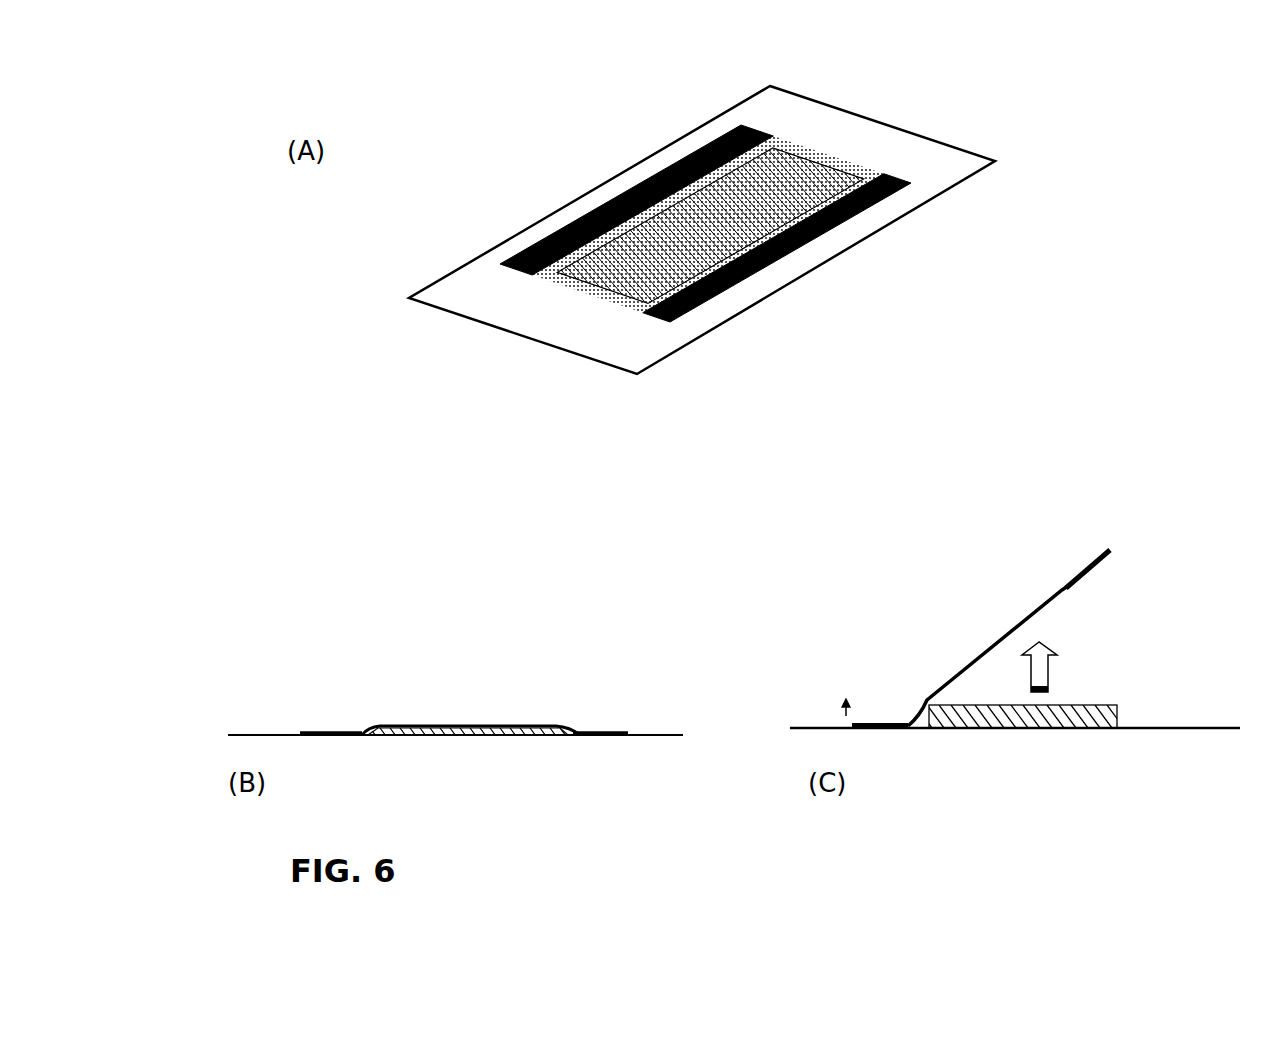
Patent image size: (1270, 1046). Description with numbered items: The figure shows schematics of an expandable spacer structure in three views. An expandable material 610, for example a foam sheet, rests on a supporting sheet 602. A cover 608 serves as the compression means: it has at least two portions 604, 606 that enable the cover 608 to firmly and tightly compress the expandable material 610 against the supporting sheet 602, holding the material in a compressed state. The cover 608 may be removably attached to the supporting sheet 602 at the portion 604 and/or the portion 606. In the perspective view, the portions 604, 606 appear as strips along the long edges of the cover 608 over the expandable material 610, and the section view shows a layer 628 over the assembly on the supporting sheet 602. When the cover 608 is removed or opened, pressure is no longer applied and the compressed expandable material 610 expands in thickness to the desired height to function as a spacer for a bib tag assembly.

The supporting sheet 602 is at (643, 735).
The first portion of cover 604 is at (520, 253).
The second portion of cover 606 is at (682, 298).
The cover 608 is at (874, 180).
The expandable material 610 is at (790, 166).
The cover layer 628 is at (452, 723).